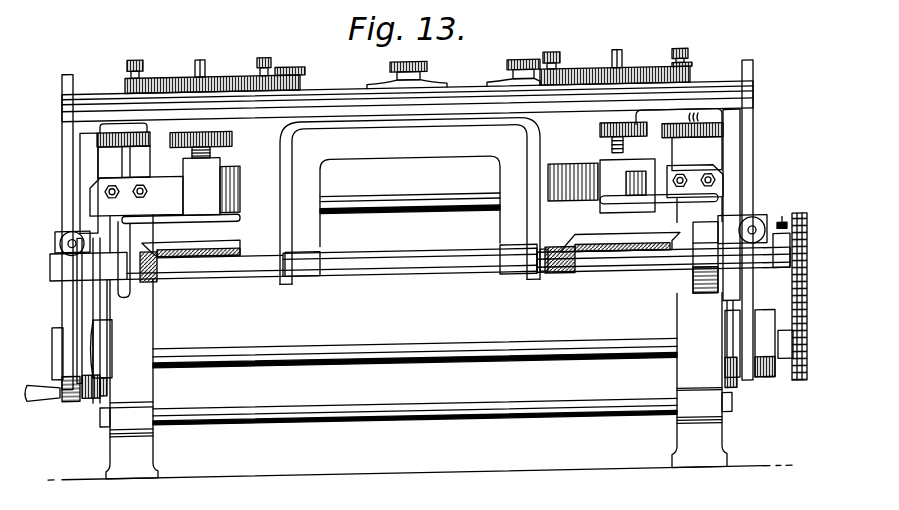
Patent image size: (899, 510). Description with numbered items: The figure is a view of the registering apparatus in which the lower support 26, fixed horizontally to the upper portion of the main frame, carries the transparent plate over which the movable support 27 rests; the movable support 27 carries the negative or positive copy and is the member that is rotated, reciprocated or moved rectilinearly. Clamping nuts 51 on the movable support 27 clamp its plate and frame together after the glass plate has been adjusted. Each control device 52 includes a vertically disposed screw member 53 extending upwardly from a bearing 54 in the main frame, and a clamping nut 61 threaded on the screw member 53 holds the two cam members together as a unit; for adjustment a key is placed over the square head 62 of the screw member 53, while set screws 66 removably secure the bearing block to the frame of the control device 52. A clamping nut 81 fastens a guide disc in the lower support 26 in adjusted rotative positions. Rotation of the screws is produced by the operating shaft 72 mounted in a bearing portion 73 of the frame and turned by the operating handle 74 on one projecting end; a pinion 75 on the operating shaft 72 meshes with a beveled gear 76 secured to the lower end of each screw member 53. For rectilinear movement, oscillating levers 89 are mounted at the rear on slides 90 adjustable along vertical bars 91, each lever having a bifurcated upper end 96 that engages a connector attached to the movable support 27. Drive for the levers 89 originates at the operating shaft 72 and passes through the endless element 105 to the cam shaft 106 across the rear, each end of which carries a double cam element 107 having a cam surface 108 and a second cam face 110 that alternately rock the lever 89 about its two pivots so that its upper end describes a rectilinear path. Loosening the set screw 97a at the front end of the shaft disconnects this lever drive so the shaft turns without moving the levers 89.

The lower support 26 is at (443, 112).
The movable support 27 is at (466, 97).
The clamping nut 51 is at (390, 78).
The control device 52 is at (172, 81).
The screw member 53 is at (211, 156).
The bearing 54 is at (219, 186).
The clamping nut 61 is at (232, 141).
The square head 62 is at (206, 70).
The set screw 66 is at (690, 70).
The operating shaft 72 is at (379, 275).
The bearing portion 73 is at (307, 243).
The operating handle 74 is at (76, 302).
The pinion 75 is at (156, 281).
The beveled gear 76 is at (248, 258).
The clamping nut 81 is at (97, 138).
The oscillating lever 89 is at (88, 208).
The slide 90 is at (62, 239).
The vertical bar 91 is at (96, 167).
The bifurcated upper end 96 is at (62, 80).
The set screw 97a is at (782, 240).
The endless element 105 is at (805, 397).
The cam shaft 106 is at (472, 353).
The double cam element 107 is at (88, 401).
The cam surface 108 is at (775, 375).
The second cam face 110 is at (93, 347).